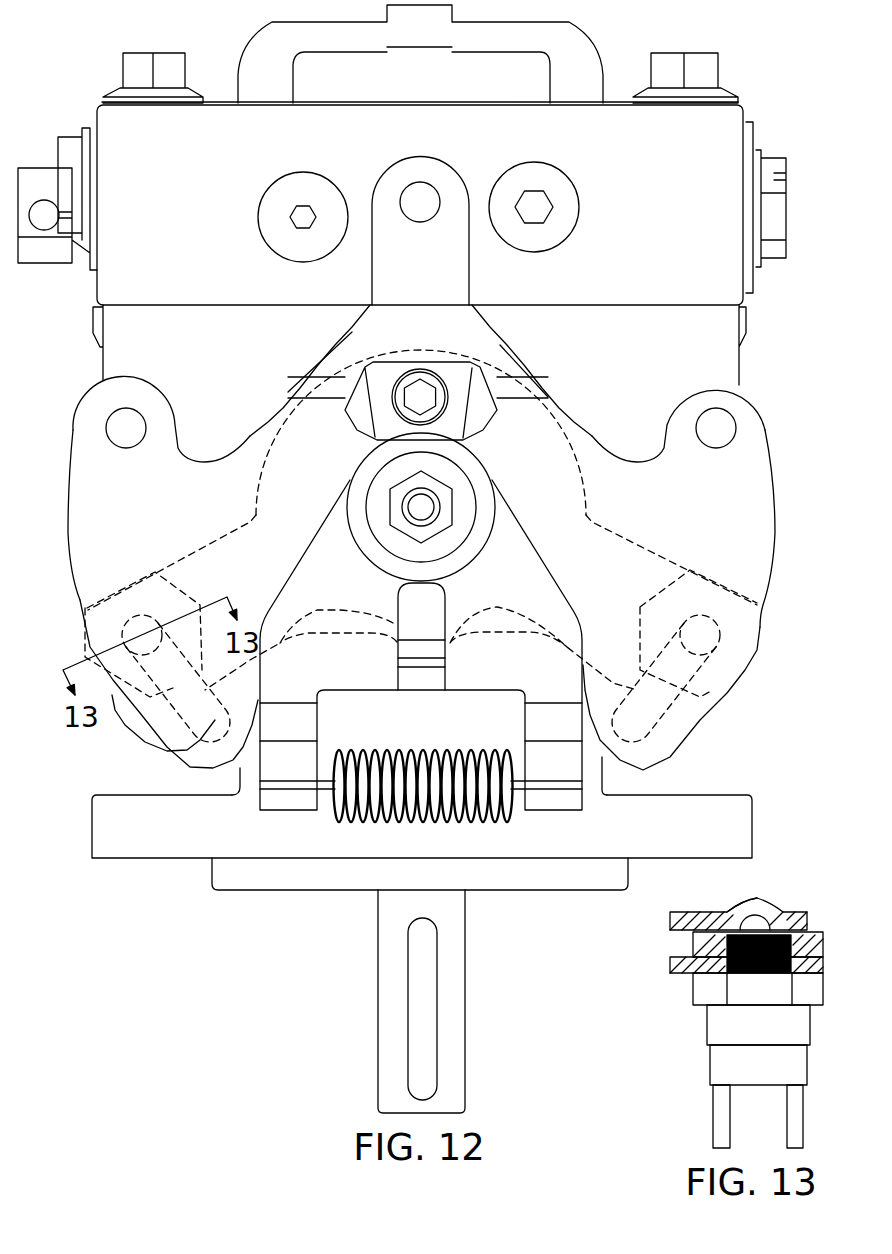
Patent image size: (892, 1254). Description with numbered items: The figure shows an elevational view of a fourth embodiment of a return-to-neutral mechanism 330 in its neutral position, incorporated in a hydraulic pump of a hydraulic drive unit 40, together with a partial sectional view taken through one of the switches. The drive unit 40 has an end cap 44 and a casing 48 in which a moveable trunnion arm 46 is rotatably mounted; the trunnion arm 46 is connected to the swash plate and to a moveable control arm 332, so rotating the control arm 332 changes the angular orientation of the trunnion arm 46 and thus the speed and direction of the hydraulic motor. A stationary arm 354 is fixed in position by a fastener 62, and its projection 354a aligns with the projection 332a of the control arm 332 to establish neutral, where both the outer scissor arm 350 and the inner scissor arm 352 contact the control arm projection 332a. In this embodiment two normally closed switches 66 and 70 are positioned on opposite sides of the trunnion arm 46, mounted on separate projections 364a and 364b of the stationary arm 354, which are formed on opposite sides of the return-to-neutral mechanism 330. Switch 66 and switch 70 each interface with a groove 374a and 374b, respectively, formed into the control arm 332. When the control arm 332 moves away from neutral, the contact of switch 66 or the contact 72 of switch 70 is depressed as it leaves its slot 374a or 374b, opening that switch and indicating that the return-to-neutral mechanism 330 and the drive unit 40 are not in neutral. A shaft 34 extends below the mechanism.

In FIG. 12, the hydraulic drive unit 40 is at (763, 58).
In FIG. 12, the end cap 44 is at (157, 216).
In FIG. 12, the casing 48 is at (195, 359).
In FIG. 12, the control arm 332 is at (403, 289).
In FIG. 13, the control arm 332 is at (693, 910).
In FIG. 12, the fastener 62 is at (397, 377).
In FIG. 12, the trunnion arm 46 is at (422, 507).
In FIG. 12, the switch 70 is at (83, 652).
In FIG. 13, the switch 70 is at (775, 1079).
In FIG. 12, the stationary arm 354 is at (763, 637).
In FIG. 13, the stationary arm 354 is at (700, 973).
In FIG. 12, the switch 66 is at (747, 660).
In FIG. 12, the projection 364a is at (727, 692).
In FIG. 12, the groove 374a is at (660, 725).
In FIG. 12, the outer scissor arm 350 is at (312, 676).
In FIG. 12, the inner scissor arm 352 is at (492, 676).
In FIG. 12, the projection of control arm 332a is at (420, 648).
In FIG. 12, the projection of stationary arm 354a is at (428, 675).
In FIG. 12, the projection 364b is at (112, 697).
In FIG. 12, the groove 374b is at (183, 727).
In FIG. 13, the groove 374b is at (767, 920).
In FIG. 12, the return-to-neutral mechanism 330 is at (207, 833).
In FIG. 12, the shaft 34 is at (463, 1000).
In FIG. 13, the contact 72 is at (752, 927).